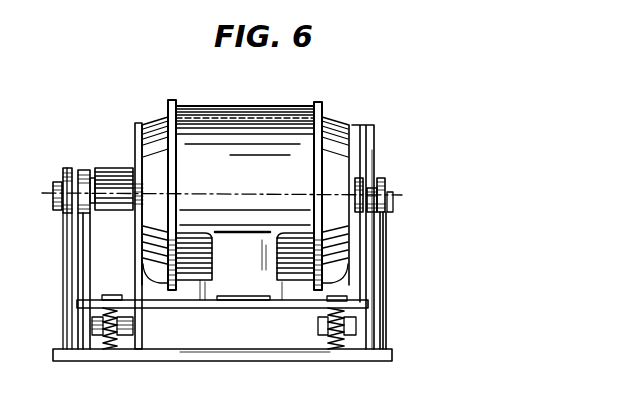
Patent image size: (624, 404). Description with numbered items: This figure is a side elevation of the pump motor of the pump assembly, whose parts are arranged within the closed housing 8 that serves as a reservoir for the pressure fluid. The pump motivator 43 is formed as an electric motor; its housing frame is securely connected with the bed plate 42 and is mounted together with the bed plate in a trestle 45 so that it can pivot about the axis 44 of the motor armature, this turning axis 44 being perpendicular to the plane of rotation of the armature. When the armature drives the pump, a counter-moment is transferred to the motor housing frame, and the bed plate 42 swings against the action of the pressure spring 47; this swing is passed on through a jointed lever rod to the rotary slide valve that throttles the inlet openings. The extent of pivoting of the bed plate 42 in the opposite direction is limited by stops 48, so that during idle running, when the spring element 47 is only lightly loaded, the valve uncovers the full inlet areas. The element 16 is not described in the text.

The closed housing 8 is at (366, 130).
The bearing housing 16 is at (110, 166).
The bed plate 42 is at (239, 308).
The pump motivator 43 is at (296, 106).
The axis 44 is at (422, 196).
The trestle 45 is at (66, 276).
The pressure spring 47 is at (108, 349).
The stops 48 is at (110, 295).